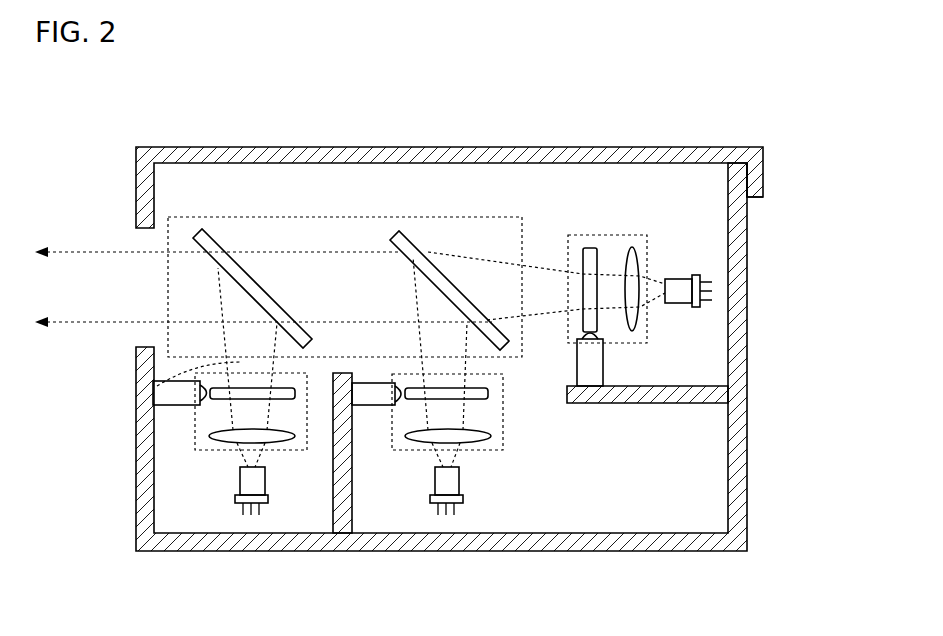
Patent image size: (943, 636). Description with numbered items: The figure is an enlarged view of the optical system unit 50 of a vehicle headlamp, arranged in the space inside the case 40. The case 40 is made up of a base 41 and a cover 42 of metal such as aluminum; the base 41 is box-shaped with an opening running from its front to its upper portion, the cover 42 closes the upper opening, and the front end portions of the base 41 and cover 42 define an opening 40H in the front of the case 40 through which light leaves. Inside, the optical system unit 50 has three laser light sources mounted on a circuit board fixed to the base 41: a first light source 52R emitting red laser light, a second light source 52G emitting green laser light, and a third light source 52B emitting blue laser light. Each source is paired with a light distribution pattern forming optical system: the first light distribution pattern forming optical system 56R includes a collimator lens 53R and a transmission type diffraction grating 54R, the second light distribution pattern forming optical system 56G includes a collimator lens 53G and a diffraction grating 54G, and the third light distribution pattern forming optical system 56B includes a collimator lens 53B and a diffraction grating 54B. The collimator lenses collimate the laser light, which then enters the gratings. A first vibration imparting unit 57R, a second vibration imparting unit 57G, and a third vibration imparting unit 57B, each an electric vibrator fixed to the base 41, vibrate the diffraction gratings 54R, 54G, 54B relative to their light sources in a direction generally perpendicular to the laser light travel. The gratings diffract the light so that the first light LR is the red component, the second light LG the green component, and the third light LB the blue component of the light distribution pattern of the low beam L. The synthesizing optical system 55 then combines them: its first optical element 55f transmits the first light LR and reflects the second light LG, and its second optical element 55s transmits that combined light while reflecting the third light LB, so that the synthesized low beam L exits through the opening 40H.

The case 40 is at (803, 93).
The base 41 is at (742, 199).
The cover 42 is at (720, 147).
The opening 40H is at (116, 238).
The optical system unit 50 is at (200, 175).
The synthesizing optical system 55 is at (313, 215).
The second optical element 55s is at (203, 230).
The first optical element 55f is at (397, 231).
The low beam L is at (68, 252).
The first light LR is at (547, 263).
The second light LG is at (470, 362).
The third light LB is at (163, 380).
The first light source 52R is at (683, 285).
The collimator lens 53R is at (621, 248).
The diffraction grating 54R is at (590, 248).
The first light distribution pattern forming optical system 56R is at (630, 237).
The first vibration imparting unit 57R is at (595, 368).
The second light source 52G is at (443, 485).
The collimator lens 53G is at (478, 437).
The diffraction grating 54G is at (485, 393).
The second light distribution pattern forming optical system 56G is at (407, 457).
The second vibration imparting unit 57G is at (373, 400).
The third light source 52B is at (250, 485).
The collimator lens 53B is at (283, 437).
The diffraction grating 54B is at (215, 400).
The third light distribution pattern forming optical system 56B is at (237, 445).
The third vibration imparting unit 57B is at (165, 393).